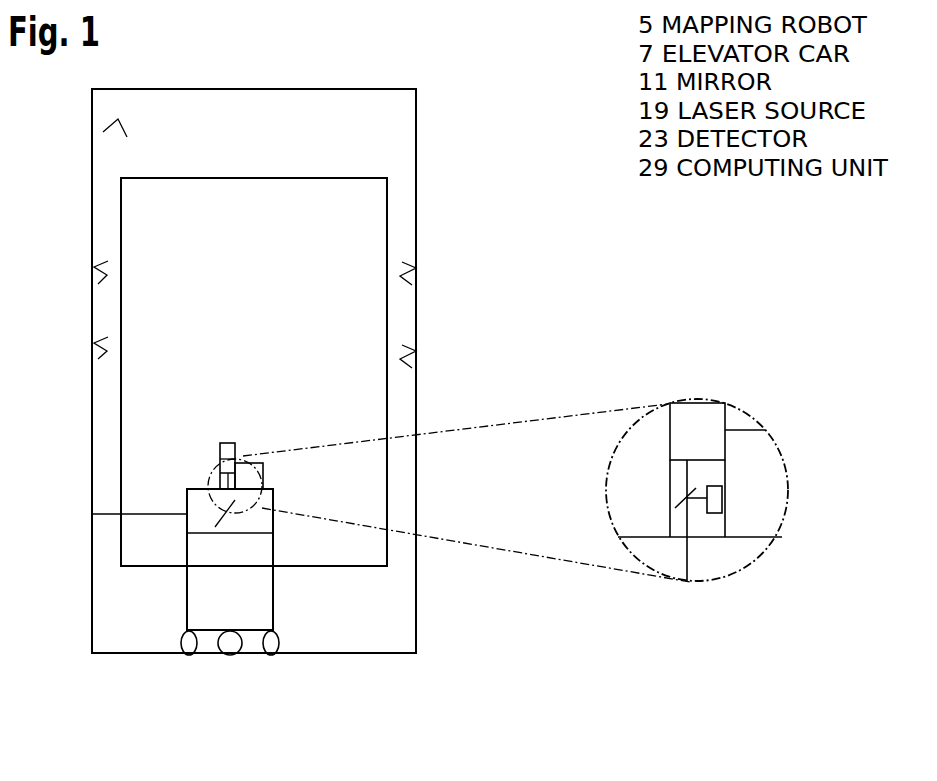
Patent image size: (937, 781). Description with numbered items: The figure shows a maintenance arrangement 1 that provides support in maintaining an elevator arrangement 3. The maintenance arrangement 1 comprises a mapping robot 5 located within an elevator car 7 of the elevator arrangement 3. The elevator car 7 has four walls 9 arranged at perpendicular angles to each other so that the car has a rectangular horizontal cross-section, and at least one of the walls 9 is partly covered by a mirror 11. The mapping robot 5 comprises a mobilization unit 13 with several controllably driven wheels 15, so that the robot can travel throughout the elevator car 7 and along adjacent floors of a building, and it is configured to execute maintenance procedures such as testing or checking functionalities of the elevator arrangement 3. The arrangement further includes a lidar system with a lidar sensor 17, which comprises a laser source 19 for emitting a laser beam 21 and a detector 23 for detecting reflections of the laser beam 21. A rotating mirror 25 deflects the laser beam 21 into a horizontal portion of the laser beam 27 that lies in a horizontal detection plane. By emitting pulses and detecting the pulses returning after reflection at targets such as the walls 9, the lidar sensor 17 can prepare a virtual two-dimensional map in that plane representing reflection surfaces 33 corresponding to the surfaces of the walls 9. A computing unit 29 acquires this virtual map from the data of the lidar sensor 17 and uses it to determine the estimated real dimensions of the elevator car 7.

The maintenance arrangement 1 is at (284, 533).
The elevator arrangement 3 is at (510, 122).
The mapping robot 5 is at (253, 558).
The elevator car 7 is at (416, 213).
The walls 9 is at (103, 132).
The mirror 11 is at (147, 213).
The mobilization unit 13 is at (290, 640).
The wheels 15 is at (268, 655).
The lidar sensor 17 is at (207, 440).
The laser source 19 is at (228, 443).
The laser beam 21 is at (228, 500).
The detector 23 is at (240, 458).
The rotating mirror 25 is at (235, 500).
The horizontal portion of the laser beam 27 is at (147, 517).
The computing unit 29 is at (272, 470).
The reflection surfaces 33 is at (98, 357).